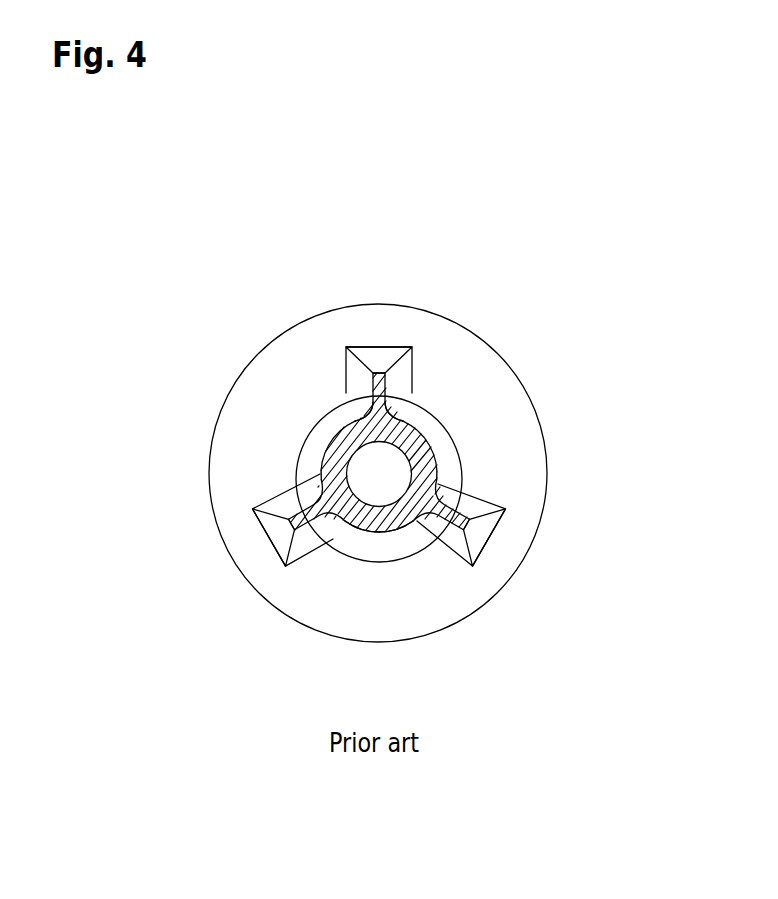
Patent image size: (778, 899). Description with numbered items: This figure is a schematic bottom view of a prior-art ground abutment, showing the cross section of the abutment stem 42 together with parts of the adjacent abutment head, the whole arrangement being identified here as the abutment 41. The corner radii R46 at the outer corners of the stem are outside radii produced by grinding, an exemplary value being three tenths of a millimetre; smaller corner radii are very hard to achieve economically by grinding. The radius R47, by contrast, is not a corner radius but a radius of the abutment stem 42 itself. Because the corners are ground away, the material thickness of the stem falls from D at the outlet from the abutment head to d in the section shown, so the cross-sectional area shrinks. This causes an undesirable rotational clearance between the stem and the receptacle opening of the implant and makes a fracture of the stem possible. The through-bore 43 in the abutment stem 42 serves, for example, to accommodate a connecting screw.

The prior art shaft insert 41 is at (298, 341).
The abutment stem 42 is at (440, 440).
The through-bore 43 is at (352, 478).
The corner radii R46 is at (351, 408).
The radius of the abutment stem R47 is at (363, 559).
The material thickness at the outlet from the abutment head D is at (378, 347).
The material thickness in the cross section shown d is at (385, 372).